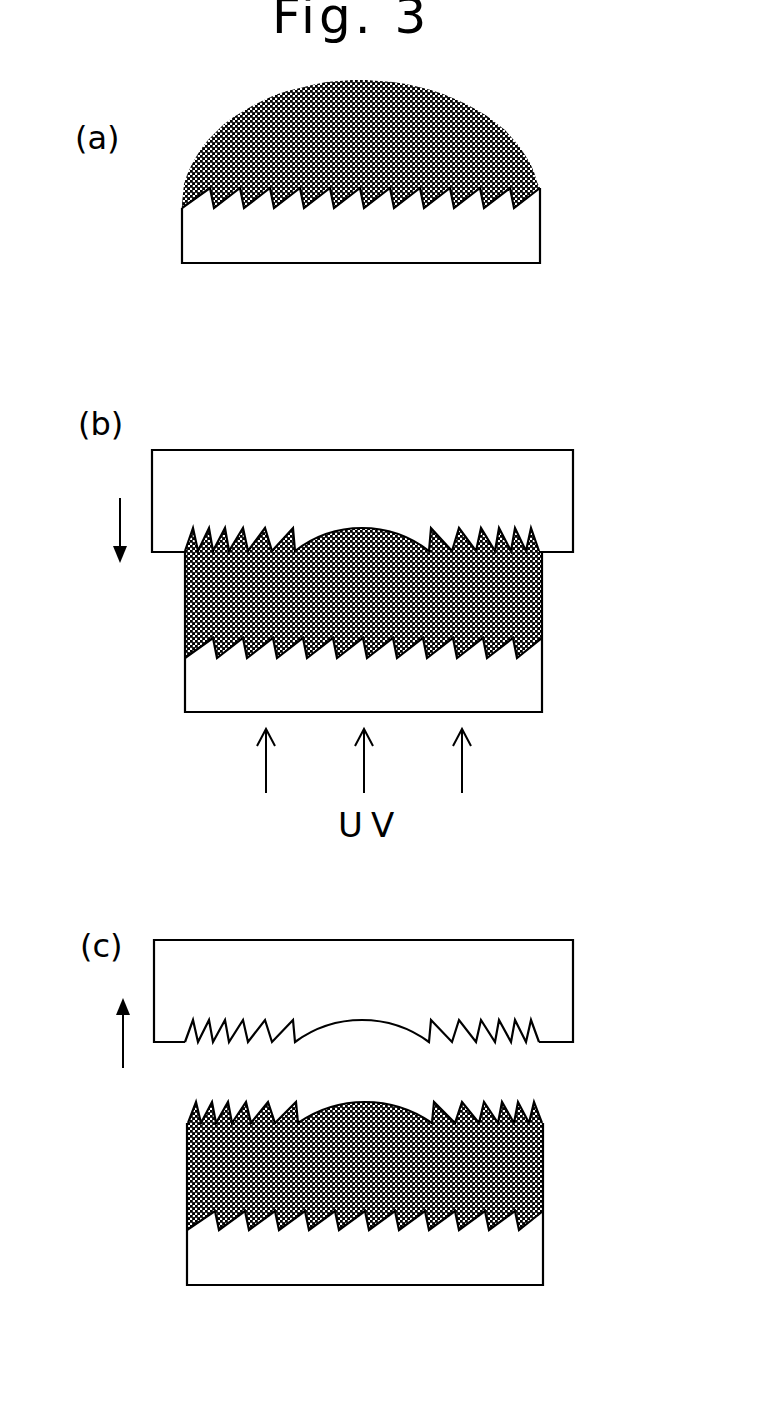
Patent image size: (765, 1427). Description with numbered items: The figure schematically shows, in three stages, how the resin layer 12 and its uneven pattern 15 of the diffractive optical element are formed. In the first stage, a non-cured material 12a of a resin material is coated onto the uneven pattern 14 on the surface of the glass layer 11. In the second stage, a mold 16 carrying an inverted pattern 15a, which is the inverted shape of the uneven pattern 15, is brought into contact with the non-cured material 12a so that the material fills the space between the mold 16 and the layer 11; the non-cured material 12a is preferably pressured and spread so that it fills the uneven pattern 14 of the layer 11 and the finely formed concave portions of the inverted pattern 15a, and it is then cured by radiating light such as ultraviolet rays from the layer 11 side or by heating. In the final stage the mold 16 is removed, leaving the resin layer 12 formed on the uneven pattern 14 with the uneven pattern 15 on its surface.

The layer 11 is at (527, 239).
The layer 12 is at (530, 1171).
The non-cured material 12a is at (388, 160).
The uneven pattern 14 is at (491, 180).
The uneven pattern 15 is at (512, 1088).
The inverted pattern 15a is at (220, 564).
The mold 16 is at (555, 483).